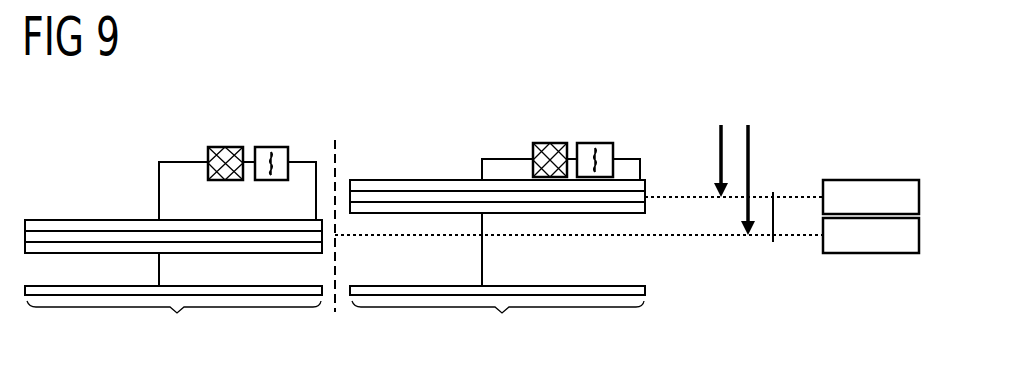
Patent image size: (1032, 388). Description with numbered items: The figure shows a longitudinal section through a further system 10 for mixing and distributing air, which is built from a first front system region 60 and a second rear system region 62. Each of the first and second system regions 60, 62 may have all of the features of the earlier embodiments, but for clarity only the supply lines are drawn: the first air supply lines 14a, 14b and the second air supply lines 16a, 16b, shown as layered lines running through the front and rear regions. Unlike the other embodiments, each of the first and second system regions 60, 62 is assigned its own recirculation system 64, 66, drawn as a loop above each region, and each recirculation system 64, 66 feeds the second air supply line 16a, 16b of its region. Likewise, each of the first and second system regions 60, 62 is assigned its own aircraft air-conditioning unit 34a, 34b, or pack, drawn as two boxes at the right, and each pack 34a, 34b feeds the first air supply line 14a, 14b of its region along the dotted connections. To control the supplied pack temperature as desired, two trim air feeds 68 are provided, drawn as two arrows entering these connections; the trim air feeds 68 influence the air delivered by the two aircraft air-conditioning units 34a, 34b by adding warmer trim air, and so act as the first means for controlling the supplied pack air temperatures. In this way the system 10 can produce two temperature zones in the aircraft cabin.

The system for mixing and distributing air 10 is at (627, 169).
The first air supply line 14a is at (110, 235).
The first air supply line 14b is at (434, 194).
The second air supply line 16a is at (45, 225).
The second air supply line 16b is at (369, 186).
The aircraft air-conditioning unit 34a is at (872, 236).
The aircraft air-conditioning unit 34b is at (871, 197).
The first front system region 60 is at (173, 218).
The second rear system region 62 is at (497, 212).
The recirculation system 64 is at (194, 135).
The recirculation system 66 is at (522, 122).
The trim air feeds 68 is at (752, 127).